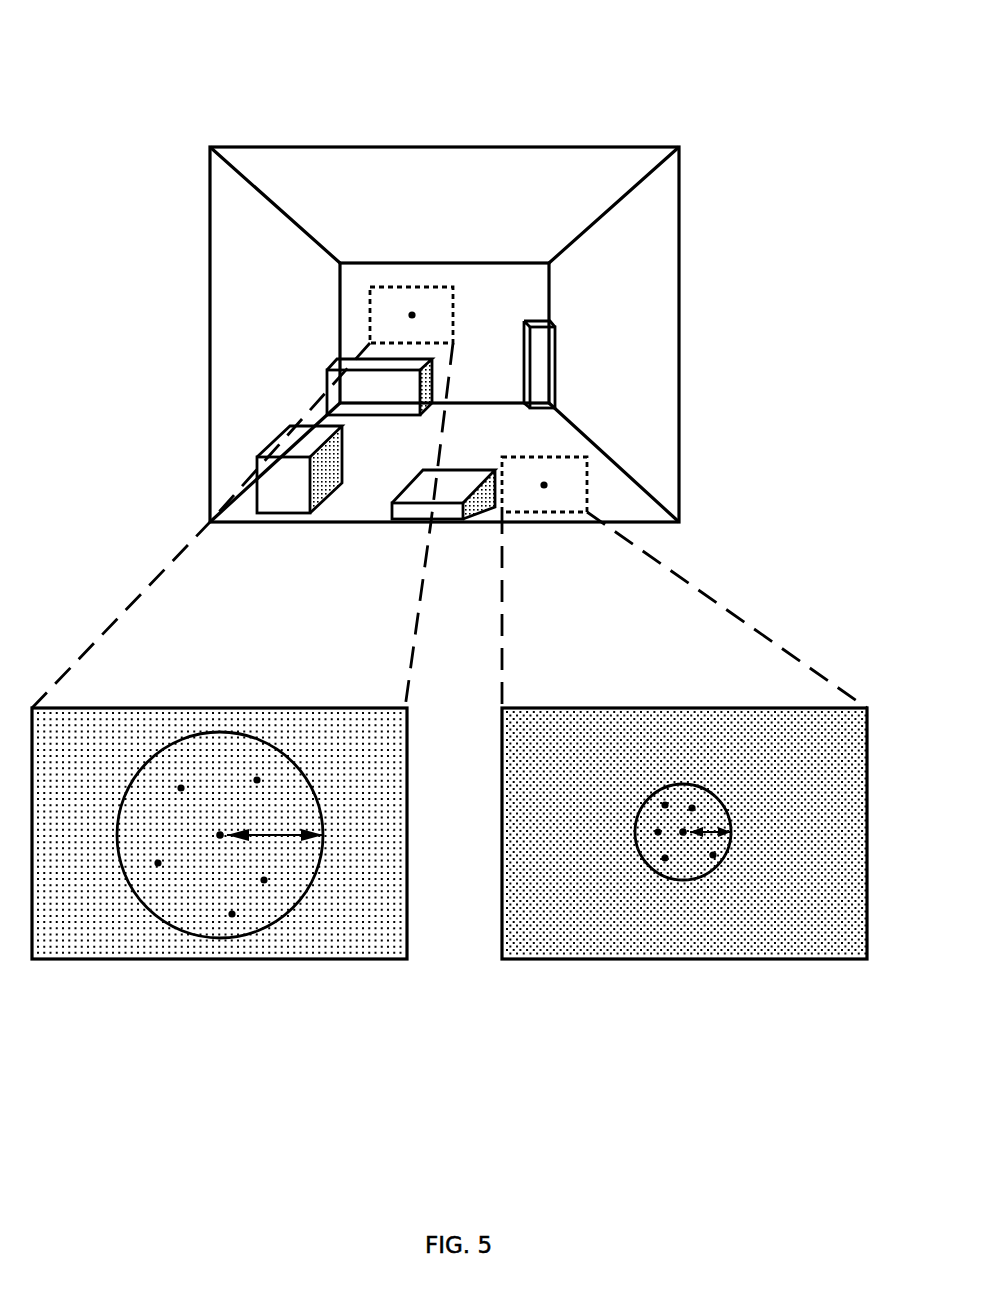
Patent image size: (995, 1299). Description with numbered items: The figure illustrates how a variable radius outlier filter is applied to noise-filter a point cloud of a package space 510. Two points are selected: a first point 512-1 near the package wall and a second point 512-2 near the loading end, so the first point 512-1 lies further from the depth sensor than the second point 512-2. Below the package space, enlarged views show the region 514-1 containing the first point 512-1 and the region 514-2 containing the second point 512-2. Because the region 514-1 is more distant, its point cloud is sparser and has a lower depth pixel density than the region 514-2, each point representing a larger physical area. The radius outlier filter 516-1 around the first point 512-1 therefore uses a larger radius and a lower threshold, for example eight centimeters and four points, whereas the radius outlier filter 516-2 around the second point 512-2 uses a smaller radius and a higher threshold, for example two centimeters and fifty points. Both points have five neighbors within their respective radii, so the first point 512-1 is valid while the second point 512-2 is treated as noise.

The package space 510 is at (146, 55).
The first point 512-1 is at (413, 288).
The region 514-1 is at (370, 316).
The radius outlier filter 516-1 is at (220, 862).
The second point 512-2 is at (572, 486).
The region 514-2 is at (587, 501).
The radius outlier filter 516-2 is at (683, 858).